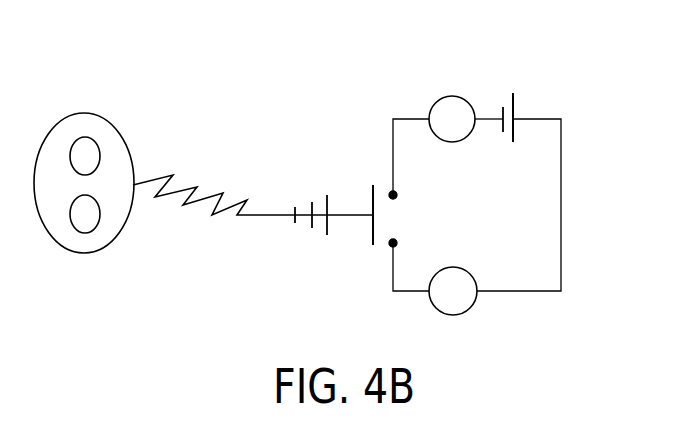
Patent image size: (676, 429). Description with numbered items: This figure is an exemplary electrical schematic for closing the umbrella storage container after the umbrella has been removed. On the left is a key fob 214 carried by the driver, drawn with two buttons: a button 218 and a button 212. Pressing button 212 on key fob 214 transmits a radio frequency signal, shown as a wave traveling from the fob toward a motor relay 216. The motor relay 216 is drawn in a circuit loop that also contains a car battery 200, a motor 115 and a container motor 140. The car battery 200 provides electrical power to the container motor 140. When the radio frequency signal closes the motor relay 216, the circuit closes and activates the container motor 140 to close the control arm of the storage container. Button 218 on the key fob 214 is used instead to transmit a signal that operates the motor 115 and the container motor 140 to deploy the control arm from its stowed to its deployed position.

The key fob 214 is at (130, 148).
The button 218 is at (92, 138).
The button 212 is at (98, 223).
The motor relay 216 is at (370, 233).
The motor 115 is at (433, 101).
The car battery 200 is at (518, 107).
The container motor 140 is at (468, 308).